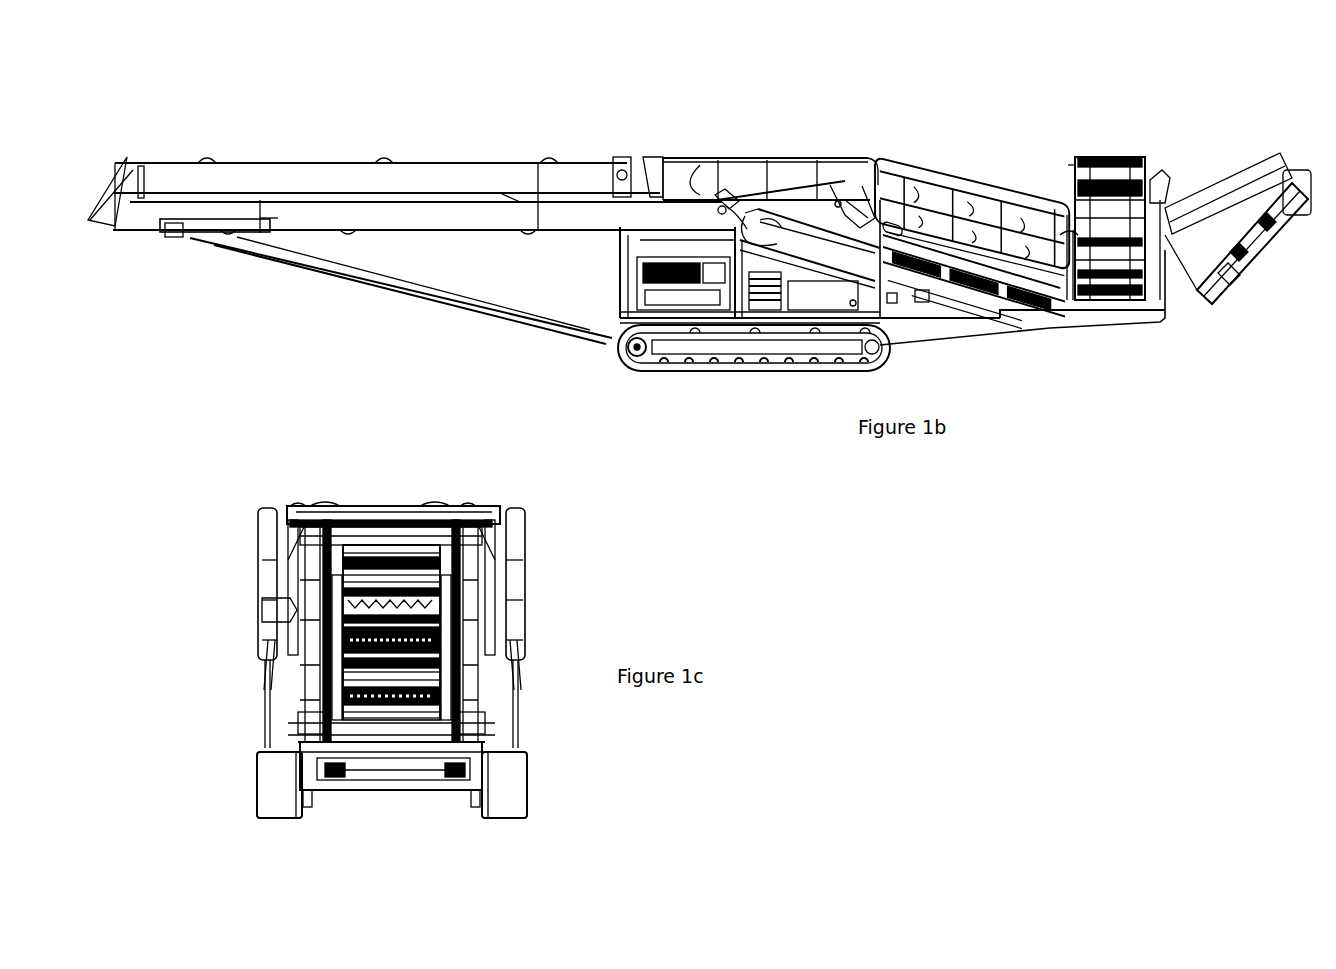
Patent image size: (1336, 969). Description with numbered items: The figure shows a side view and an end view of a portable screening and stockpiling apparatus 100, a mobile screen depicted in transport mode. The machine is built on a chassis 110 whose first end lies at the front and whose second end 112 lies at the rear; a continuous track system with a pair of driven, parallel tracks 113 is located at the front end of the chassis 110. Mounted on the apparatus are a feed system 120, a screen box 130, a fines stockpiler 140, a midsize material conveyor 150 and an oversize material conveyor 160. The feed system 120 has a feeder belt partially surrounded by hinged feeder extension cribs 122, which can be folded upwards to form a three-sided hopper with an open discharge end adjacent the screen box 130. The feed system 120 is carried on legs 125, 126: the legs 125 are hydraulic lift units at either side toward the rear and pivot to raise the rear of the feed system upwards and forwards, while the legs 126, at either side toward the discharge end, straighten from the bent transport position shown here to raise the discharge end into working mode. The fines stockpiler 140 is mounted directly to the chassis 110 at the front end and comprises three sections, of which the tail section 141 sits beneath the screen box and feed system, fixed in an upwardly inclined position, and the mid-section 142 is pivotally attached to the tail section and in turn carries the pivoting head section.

In FIG. 1B, the portable screening and stockpiling apparatus 100 is at (699, 263).
In FIG. 1B, the chassis 110 is at (940, 328).
In FIG. 1C, the second end 112 is at (388, 788).
In FIG. 1B, the tracks 113 is at (742, 362).
In FIG. 1C, the tracks 113 is at (266, 776).
In FIG. 1C, the feed system 120 is at (386, 512).
In FIG. 1B, the hinged feeder extension cribs 122 is at (735, 176).
In FIG. 1B, the legs 125 is at (720, 198).
In FIG. 1B, the legs 126 is at (843, 213).
In FIG. 1B, the screen box 130 is at (958, 170).
In FIG. 1C, the fines stockpiler 140 is at (330, 658).
In FIG. 1B, the tail section 141 is at (823, 245).
In FIG. 1B, the mid-section 142 is at (436, 212).
In FIG. 1B, the midsize material conveyor 150 is at (1122, 155).
In FIG. 1C, the midsize material conveyor 150 is at (527, 608).
In FIG. 1B, the oversize material conveyor 160 is at (1238, 265).